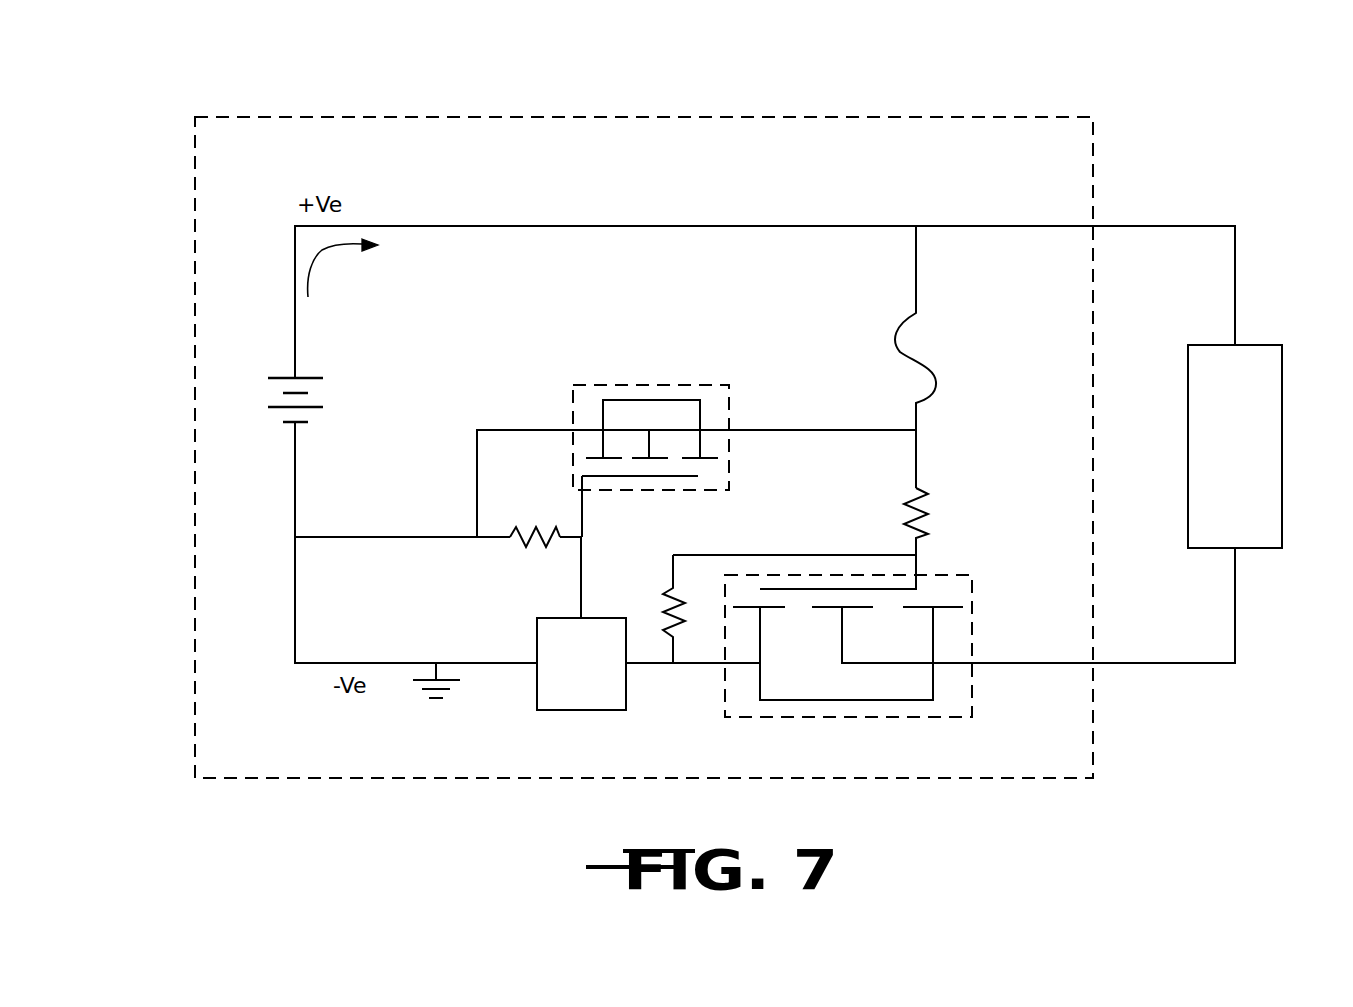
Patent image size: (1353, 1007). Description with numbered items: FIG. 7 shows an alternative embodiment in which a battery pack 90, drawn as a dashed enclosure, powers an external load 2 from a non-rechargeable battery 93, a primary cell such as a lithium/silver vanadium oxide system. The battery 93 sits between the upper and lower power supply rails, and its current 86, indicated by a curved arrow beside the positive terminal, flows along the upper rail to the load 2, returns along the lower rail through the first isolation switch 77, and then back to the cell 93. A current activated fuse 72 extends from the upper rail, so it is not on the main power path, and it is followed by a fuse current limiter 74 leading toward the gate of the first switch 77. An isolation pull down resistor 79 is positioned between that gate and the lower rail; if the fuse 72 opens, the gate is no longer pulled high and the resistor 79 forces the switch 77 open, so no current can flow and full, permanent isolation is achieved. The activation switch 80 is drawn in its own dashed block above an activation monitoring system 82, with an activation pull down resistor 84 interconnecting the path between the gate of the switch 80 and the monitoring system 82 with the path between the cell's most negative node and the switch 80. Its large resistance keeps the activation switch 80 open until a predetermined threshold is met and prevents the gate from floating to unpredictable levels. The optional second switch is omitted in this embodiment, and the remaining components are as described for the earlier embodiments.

The load 2 is at (1284, 405).
The current activated fuse 72 is at (918, 272).
The fuse current limiter 74 is at (928, 508).
The first isolation switch 77 is at (975, 606).
The isolation pull down resistor 79 is at (663, 615).
The activation switch 80 is at (605, 385).
The activation monitoring system 82 is at (581, 664).
The activation pull down resistor 84 is at (537, 553).
The current 86 is at (322, 258).
The battery pack 90 is at (654, 117).
The non-rechargeable battery 93 is at (322, 395).